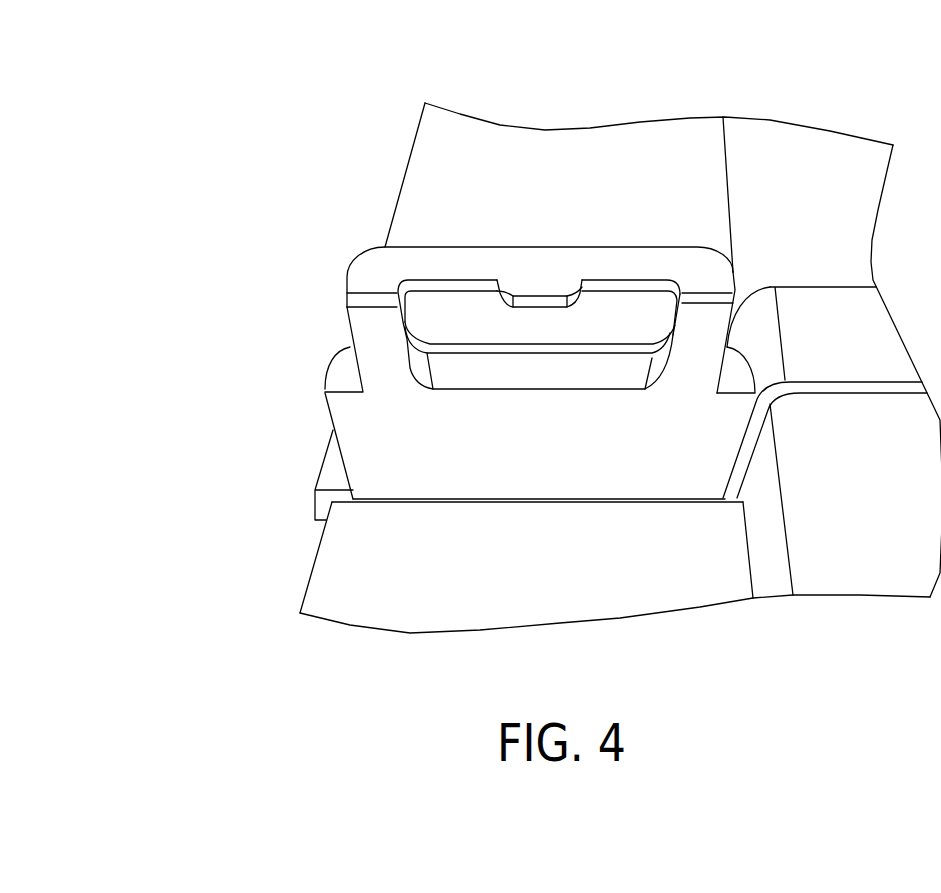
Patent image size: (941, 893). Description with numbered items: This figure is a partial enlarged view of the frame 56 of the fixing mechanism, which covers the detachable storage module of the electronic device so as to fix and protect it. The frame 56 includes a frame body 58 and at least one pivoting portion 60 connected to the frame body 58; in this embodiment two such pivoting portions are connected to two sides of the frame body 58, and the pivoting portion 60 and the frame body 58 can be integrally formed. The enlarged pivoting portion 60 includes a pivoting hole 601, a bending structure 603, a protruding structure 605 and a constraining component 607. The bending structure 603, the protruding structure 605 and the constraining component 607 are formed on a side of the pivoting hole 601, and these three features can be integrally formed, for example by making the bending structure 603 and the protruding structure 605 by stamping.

The frame 56 is at (191, 122).
The frame body 58 is at (420, 185).
The pivoting portion 60 is at (284, 416).
The pivoting hole 601 is at (637, 308).
The bending structure 603 is at (358, 283).
The protruding structure 605 is at (522, 368).
The constraining component 607 is at (543, 293).